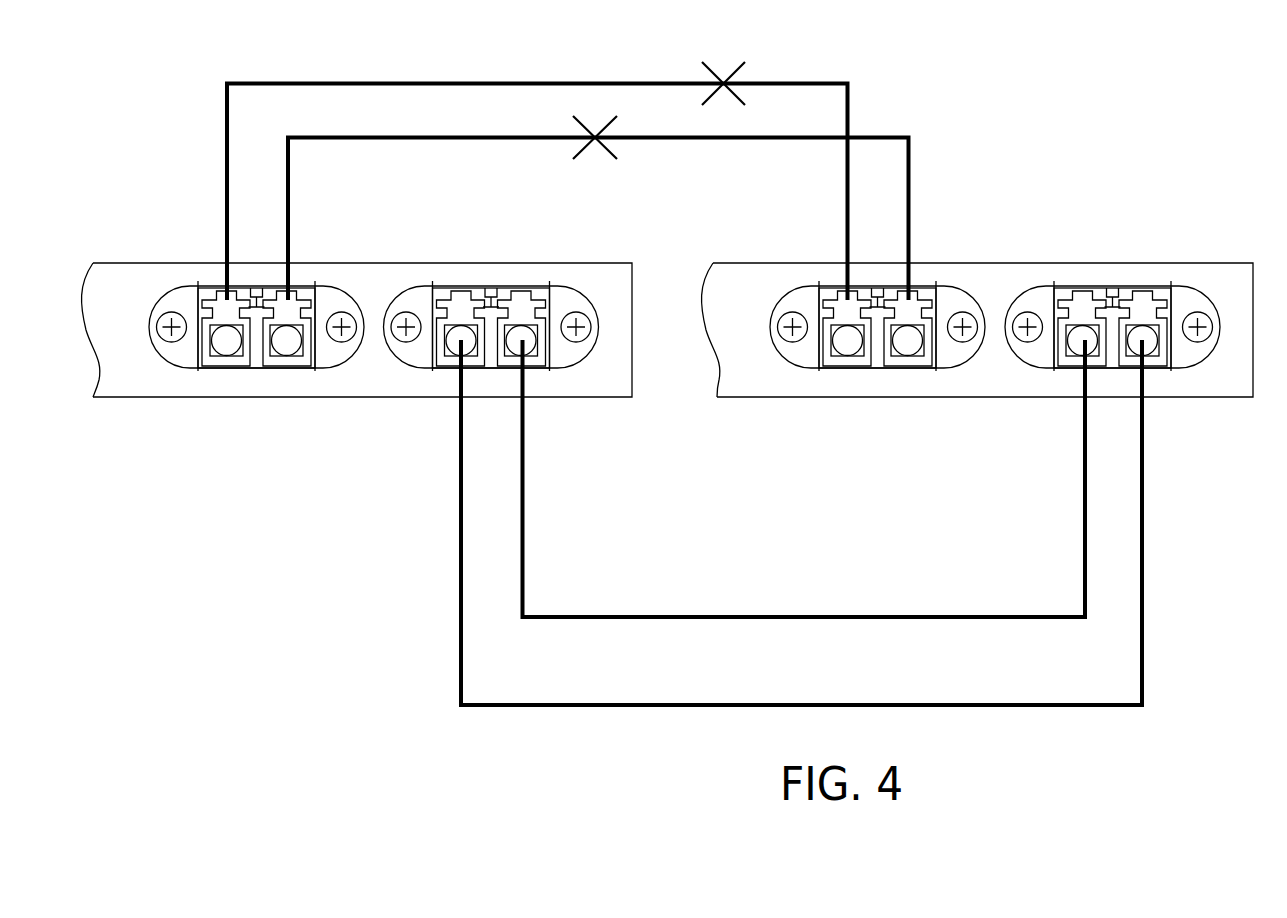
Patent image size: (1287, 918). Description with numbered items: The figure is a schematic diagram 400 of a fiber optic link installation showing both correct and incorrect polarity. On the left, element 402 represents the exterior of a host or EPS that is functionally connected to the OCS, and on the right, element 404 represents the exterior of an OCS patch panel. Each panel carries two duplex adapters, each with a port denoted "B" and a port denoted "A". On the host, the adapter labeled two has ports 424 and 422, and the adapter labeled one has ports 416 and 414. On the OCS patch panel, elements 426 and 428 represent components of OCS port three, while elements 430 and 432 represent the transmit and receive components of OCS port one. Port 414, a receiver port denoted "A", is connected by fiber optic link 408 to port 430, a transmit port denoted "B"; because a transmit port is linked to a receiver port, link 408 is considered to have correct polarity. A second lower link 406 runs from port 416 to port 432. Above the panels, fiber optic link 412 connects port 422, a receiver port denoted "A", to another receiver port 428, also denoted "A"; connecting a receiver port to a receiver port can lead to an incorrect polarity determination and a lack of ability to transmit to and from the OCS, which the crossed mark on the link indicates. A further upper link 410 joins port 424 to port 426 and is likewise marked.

The fiber optic connection system 400 is at (300, 629).
The exterior of a host or EPS 402 is at (113, 387).
The exterior of an OCS patch panel 404 is at (733, 387).
The first cable 406 is at (460, 530).
The fiber optic link 408 is at (528, 528).
The third cable 410 is at (447, 82).
The fiber optic link 412 is at (897, 135).
The receiver port 414 is at (543, 290).
The connector port B of first adapter 416 is at (442, 290).
The receiver port 422 is at (307, 290).
The connector port B of second adapter 424 is at (203, 290).
The component of OCS port 3 426 is at (822, 290).
The receiver port 428 is at (932, 290).
The transmit port 430 is at (1060, 290).
The receive component of OCS port 1 432 is at (1162, 290).